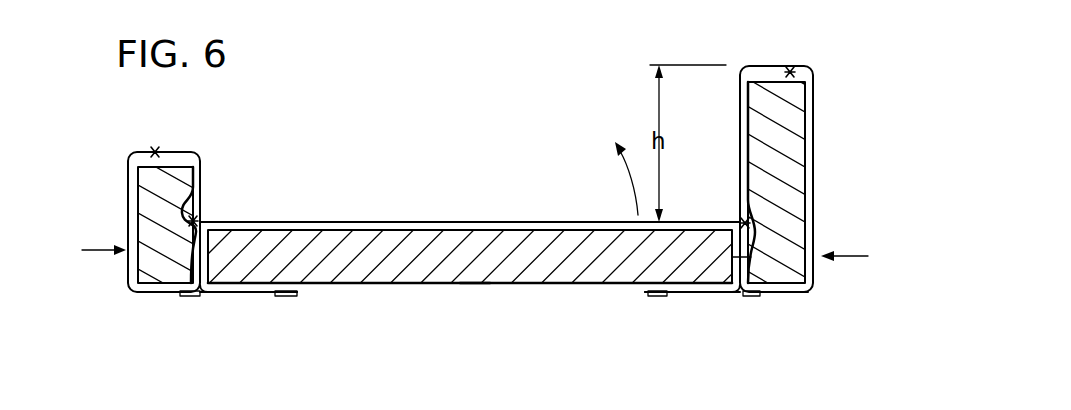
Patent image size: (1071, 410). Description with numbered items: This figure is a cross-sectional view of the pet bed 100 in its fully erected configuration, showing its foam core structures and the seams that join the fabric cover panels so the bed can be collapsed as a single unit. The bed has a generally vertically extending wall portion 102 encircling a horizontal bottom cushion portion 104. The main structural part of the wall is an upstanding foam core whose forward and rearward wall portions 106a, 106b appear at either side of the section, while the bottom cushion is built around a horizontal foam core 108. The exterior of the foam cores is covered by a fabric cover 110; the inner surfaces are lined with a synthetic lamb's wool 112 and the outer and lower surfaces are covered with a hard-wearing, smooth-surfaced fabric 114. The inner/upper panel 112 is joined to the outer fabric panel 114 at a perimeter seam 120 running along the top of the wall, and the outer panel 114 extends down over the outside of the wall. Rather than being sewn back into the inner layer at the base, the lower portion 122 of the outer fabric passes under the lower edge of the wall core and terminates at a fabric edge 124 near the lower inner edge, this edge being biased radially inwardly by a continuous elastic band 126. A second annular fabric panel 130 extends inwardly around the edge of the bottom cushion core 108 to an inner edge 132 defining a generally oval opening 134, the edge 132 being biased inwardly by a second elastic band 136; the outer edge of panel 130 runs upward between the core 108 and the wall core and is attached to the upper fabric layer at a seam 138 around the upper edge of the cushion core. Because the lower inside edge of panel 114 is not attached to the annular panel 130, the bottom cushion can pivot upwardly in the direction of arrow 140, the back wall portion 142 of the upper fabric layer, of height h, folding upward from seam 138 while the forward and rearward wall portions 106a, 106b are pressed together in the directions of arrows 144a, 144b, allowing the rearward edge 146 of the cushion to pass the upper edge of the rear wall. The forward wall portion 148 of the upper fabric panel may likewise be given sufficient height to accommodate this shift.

The pet bed 100 is at (168, 125).
The wall portion 102 is at (122, 172).
The bottom cushion portion 104 is at (400, 212).
The forward wall portion 106a is at (173, 178).
The rearward wall portion 106b is at (808, 137).
The horizontal foam core 108 is at (413, 245).
The fabric cover 110 is at (827, 61).
The synthetic lamb's wool 112 is at (432, 240).
The outer fabric panel 114 is at (128, 192).
The perimeter seam 120 is at (153, 149).
The lower portion of outer fabric 122 is at (163, 296).
The fabric edge 124 is at (200, 297).
The continuous elastic band 126 is at (172, 297).
The annular fabric panel 130 is at (253, 297).
The inner edge 132 is at (293, 296).
The oval opening 134 is at (473, 302).
The second elastic band 136 is at (297, 294).
The seam 138 is at (199, 220).
The arrow 140 is at (630, 177).
The back wall portion of upper fabric layer 142 is at (740, 107).
The arrow 144a is at (97, 248).
The arrow 144b is at (848, 255).
The rearward edge of bottom cushion 146 is at (783, 298).
The forward wall portion of upper fabric panel 148 is at (200, 173).